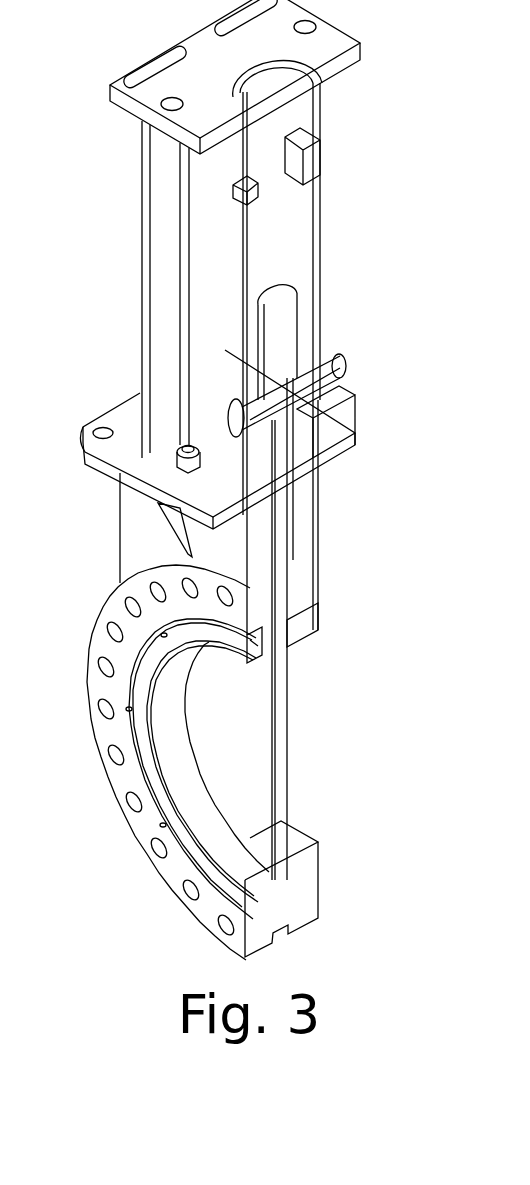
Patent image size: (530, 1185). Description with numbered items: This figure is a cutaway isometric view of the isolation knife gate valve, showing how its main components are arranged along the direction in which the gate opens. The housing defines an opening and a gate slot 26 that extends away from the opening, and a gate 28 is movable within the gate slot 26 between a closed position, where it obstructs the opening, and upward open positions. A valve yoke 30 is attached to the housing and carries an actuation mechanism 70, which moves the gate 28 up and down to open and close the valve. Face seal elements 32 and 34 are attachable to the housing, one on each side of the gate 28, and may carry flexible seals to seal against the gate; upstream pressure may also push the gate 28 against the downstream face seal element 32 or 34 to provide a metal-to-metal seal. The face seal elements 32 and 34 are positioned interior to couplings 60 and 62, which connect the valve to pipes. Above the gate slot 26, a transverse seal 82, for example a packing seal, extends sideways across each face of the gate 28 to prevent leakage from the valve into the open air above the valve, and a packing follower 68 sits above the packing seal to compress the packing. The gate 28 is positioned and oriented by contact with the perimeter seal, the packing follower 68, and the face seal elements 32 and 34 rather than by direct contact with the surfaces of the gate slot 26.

The valve yoke 30 is at (322, 207).
The actuation mechanism 70 is at (300, 370).
The packing follower 68 is at (298, 432).
The gate slot 26 is at (287, 550).
The transverse seal 82 is at (288, 493).
The gate 28 is at (282, 735).
The face seal element 34 is at (304, 838).
The coupling 62 is at (312, 905).
The face seal element 32 is at (157, 790).
The coupling 60 is at (170, 883).